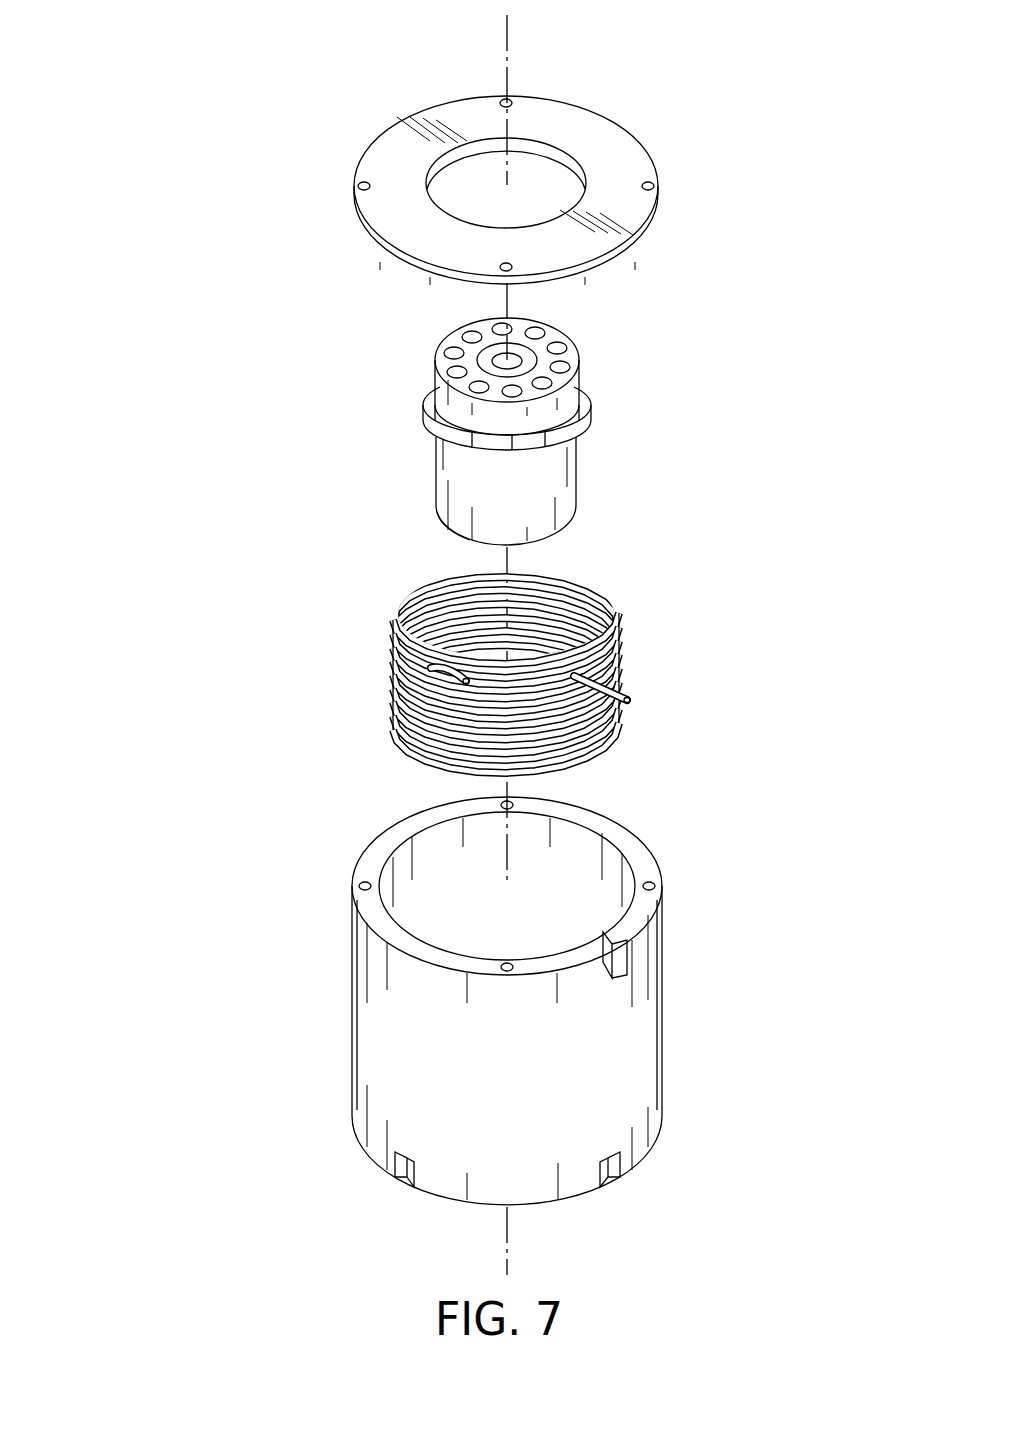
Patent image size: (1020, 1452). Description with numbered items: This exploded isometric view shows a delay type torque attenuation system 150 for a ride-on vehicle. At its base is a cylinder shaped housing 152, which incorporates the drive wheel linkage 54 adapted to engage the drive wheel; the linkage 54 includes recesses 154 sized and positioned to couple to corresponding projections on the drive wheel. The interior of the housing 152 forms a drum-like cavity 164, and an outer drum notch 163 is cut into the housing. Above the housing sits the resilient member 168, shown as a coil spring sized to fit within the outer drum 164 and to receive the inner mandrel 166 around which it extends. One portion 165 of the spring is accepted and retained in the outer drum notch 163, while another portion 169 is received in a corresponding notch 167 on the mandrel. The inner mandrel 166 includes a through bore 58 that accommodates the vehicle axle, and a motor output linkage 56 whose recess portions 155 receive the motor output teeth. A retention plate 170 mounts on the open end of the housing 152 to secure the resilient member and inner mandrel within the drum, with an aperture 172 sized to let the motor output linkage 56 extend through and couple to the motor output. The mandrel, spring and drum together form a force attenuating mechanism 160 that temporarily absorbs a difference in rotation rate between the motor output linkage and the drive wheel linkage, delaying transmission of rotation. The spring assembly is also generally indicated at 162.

The torque attenuation system 150 is at (175, 405).
The retention plate 170 is at (563, 128).
The aperture 172 is at (537, 185).
The motor output linkage 56 is at (584, 339).
The through bore 58 is at (497, 354).
The recess portions 155 is at (533, 332).
The inner mandrel 166 is at (577, 457).
The notch 167 is at (448, 537).
The force attenuating mechanism 160 is at (300, 530).
The spring assembly 162 is at (770, 641).
The resilient member 168 is at (625, 640).
The portion of resilient member 165 is at (627, 698).
The portion of resilient member 169 is at (462, 673).
The drive wheel linkage 54 is at (672, 1140).
The housing 152 is at (350, 1022).
The drum-like cavity 164 is at (598, 866).
The outer drum notch 163 is at (615, 960).
The recesses 154 is at (408, 1185).